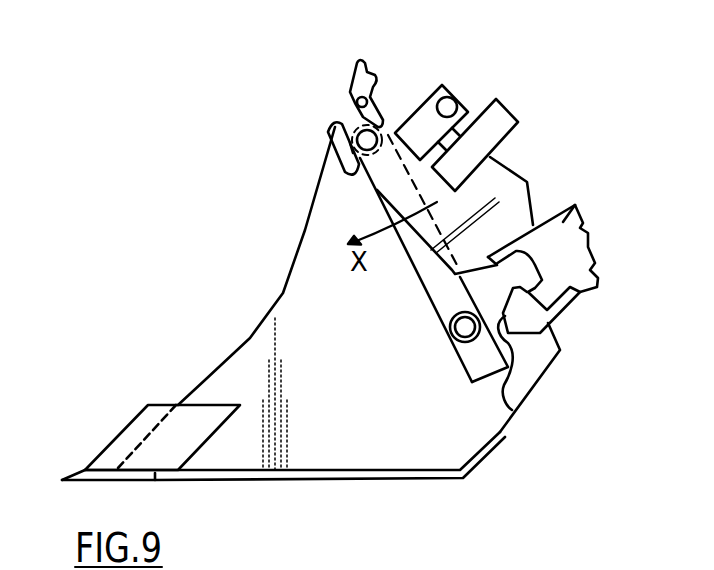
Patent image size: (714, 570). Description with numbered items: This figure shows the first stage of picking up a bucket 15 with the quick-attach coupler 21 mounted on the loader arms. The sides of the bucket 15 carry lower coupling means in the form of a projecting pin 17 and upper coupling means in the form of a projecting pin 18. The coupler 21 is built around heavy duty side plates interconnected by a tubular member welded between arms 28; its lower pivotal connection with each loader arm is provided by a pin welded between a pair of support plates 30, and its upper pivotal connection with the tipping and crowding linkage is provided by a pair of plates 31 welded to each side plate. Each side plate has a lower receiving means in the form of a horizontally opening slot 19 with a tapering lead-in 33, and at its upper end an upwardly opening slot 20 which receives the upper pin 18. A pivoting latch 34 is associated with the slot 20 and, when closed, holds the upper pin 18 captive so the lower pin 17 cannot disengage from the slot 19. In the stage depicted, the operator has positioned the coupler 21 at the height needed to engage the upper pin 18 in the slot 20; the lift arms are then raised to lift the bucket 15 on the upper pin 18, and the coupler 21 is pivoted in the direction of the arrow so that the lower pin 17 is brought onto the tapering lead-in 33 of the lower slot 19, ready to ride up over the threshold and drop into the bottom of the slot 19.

The bucket 15 is at (310, 313).
The lower projecting pin 17 is at (470, 332).
The upper projecting pin 18 is at (365, 157).
The lower receiving slot 19 is at (535, 266).
The upper receiving slot 20 is at (339, 122).
The quick coupler 21 is at (385, 183).
The arm 28 is at (508, 122).
The support plate 30 is at (575, 205).
The plate 31 is at (420, 107).
The tapering lead-in 33 is at (514, 408).
The pivoting latch 34 is at (409, 113).